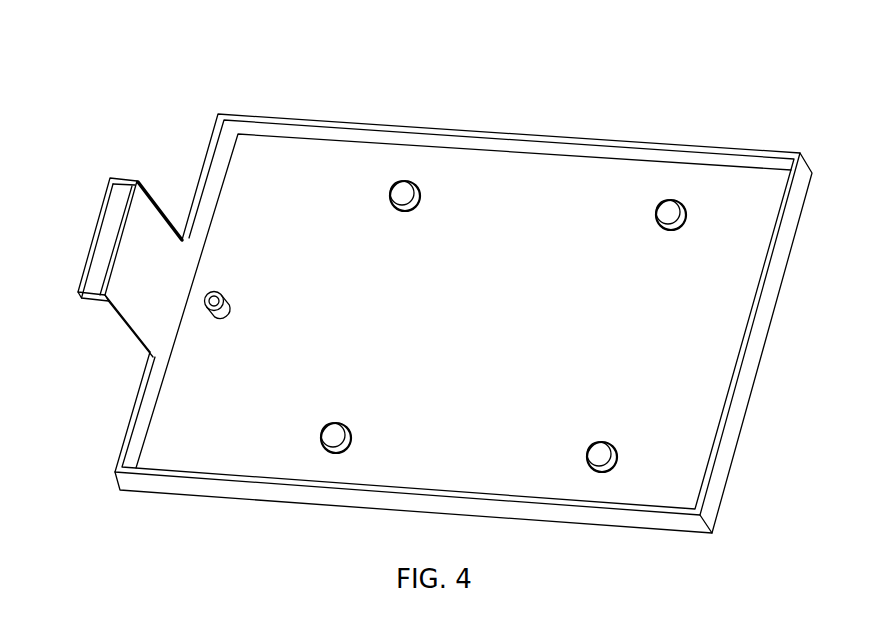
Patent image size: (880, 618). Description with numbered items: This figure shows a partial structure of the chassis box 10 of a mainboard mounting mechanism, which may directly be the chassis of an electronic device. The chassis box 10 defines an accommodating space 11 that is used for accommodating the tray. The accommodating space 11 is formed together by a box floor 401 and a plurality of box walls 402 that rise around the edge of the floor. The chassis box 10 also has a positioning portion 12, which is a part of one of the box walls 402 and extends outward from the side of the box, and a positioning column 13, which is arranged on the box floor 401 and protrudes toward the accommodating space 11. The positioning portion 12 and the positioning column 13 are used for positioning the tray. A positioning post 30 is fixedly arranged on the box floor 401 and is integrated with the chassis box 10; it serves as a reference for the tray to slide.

The chassis box 10 is at (431, 277).
The accommodating space 11 is at (472, 188).
The positioning portion 12 is at (153, 222).
The positioning column 13 is at (671, 212).
The positioning post 30 is at (223, 322).
The box floor 401 is at (369, 180).
The box wall 402 is at (217, 155).